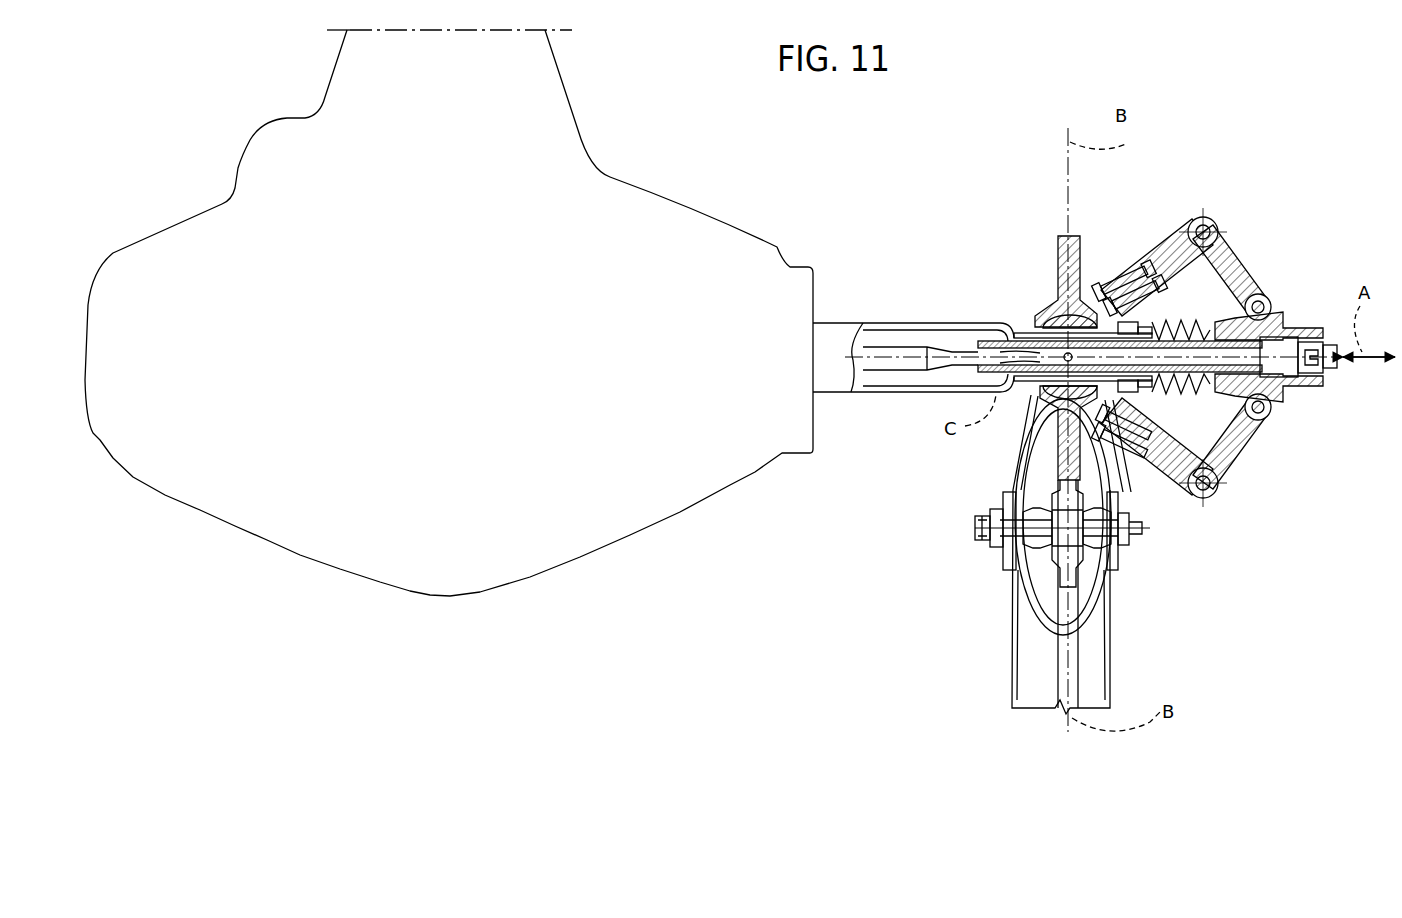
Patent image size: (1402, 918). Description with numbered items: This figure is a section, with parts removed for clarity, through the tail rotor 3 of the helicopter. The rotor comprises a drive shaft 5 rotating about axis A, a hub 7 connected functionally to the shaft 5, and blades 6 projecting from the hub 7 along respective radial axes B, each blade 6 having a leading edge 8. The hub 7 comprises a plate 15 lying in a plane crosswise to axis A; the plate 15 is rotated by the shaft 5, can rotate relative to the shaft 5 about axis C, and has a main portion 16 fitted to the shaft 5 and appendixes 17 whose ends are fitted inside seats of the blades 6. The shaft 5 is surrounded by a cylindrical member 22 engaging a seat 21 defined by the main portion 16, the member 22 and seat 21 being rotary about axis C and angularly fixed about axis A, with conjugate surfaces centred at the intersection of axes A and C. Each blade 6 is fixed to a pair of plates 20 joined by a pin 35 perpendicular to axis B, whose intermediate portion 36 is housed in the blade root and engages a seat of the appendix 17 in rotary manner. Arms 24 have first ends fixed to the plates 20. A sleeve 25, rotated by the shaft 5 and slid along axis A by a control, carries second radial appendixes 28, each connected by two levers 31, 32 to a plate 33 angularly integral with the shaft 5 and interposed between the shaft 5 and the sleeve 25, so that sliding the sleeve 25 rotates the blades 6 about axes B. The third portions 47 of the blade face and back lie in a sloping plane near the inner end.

The tail rotor 3 is at (1216, 298).
The drive shaft 5 is at (886, 323).
The blade 6 is at (1056, 553).
The hub 7 is at (1280, 276).
The leading edge 8 is at (1046, 664).
The plate 15 is at (1053, 312).
The main portion 16 is at (1060, 240).
The appendix 17 is at (1060, 597).
The plates 20 is at (1008, 556).
The seat 21 is at (1110, 262).
The cylindrical member 22 is at (1068, 328).
The arms 24 is at (1010, 468).
The sleeve 25 is at (1300, 336).
The second radial appendix 28 is at (1278, 322).
The lever 31 is at (1240, 246).
The lever 32 is at (1177, 262).
The plate 33 is at (1097, 424).
The pin 35 is at (978, 560).
The intermediate portion 36 is at (978, 537).
The third portion 47 is at (1033, 640).